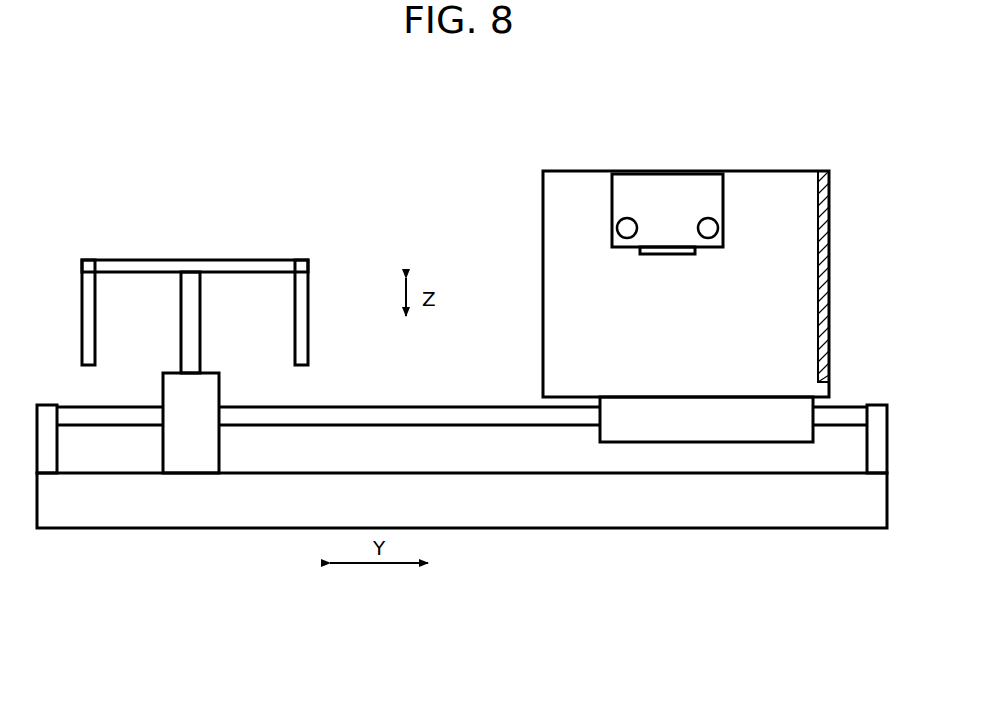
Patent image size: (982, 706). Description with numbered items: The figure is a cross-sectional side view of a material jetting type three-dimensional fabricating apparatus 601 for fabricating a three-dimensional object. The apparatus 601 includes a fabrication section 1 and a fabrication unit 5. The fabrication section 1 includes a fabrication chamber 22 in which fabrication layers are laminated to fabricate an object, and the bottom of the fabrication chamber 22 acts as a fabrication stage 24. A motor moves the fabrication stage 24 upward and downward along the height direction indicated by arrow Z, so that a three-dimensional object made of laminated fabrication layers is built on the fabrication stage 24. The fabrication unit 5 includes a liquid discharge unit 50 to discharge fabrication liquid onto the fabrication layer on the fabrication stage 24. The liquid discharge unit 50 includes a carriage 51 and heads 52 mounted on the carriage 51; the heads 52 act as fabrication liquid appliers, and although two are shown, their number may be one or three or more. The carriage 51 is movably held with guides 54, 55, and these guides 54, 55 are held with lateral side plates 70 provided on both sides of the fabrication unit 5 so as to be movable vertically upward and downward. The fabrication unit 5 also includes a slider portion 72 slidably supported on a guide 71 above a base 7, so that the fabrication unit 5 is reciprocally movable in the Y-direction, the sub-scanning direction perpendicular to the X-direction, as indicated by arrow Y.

The three-dimensional fabricating apparatus 601 is at (348, 143).
The fabrication section 1 is at (165, 203).
The fabrication chamber 22 is at (305, 303).
The fabrication stage 24 is at (203, 272).
The fabrication unit 5 is at (568, 150).
The liquid discharge unit 50 is at (602, 210).
The carriage 51 is at (668, 185).
The liquid discharge heads 52 is at (683, 256).
The guide 54 is at (708, 218).
The guide 55 is at (625, 218).
The lateral side plates 70 is at (553, 295).
The guide 71 is at (422, 411).
The slider portion 72 is at (708, 430).
The base 7 is at (547, 520).